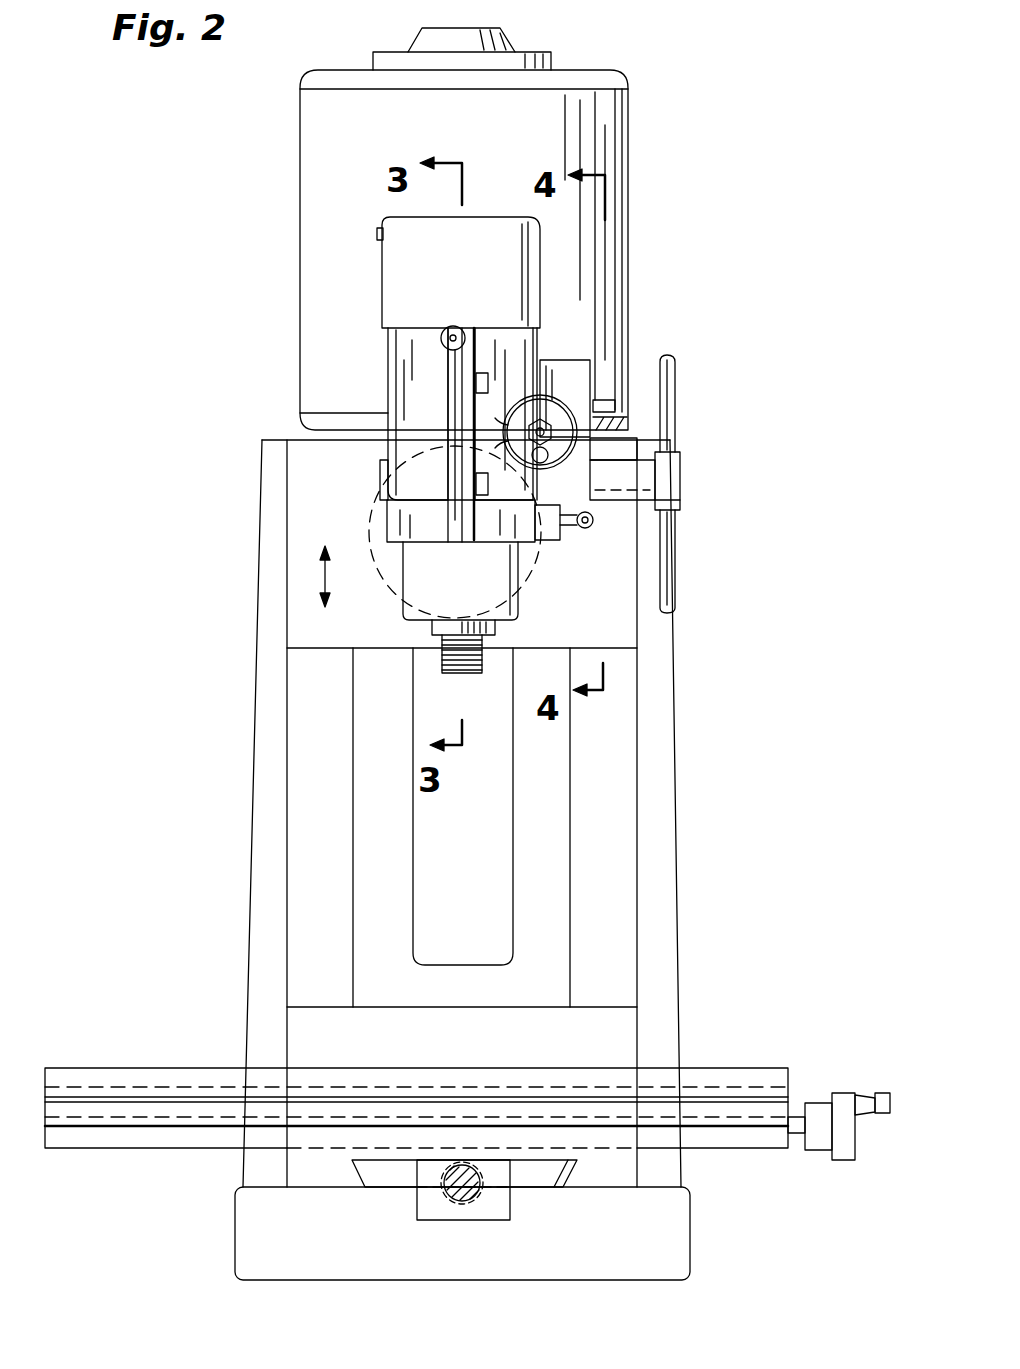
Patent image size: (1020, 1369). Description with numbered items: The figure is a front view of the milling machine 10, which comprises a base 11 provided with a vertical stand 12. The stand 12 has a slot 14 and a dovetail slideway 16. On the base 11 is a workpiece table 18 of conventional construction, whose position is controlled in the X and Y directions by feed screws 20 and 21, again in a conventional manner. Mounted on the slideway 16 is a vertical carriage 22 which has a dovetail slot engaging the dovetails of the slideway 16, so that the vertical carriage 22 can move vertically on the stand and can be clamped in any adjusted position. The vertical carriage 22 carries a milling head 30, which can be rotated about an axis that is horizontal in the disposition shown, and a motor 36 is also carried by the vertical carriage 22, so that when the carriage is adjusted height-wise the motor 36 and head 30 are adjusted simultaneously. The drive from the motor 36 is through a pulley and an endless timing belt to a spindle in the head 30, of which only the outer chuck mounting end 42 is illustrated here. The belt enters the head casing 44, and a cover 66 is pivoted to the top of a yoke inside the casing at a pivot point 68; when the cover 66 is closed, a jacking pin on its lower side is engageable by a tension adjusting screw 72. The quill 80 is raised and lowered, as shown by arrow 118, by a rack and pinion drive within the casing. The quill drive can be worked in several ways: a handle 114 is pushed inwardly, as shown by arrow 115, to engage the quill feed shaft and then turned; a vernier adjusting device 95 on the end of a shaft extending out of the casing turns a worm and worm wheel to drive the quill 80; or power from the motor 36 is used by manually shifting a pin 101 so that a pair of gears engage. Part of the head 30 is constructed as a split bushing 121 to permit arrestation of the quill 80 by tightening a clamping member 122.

The machine 10 is at (693, 791).
The base 11 is at (336, 1243).
The vertical stand 12 is at (672, 877).
The slot 14 is at (494, 893).
The dovetail slideway 16 is at (571, 797).
The workpiece table 18 is at (180, 1035).
The feed screw 20 is at (482, 1192).
The feed screw 21 is at (795, 1150).
The vertical carriage 22 is at (345, 650).
The milling head 30 is at (546, 345).
The motor 36 is at (348, 323).
The outer chuck mounting end 42 is at (446, 660).
The head casing 44 is at (528, 585).
The cover 66 is at (440, 273).
The pivot point 68 is at (377, 233).
The tension adjusting screw 72 is at (453, 326).
The quill 80 is at (455, 578).
The vernier adjusting device 95 is at (547, 468).
The pin 101 is at (610, 400).
The handle 114 is at (676, 398).
The arrow 115 is at (742, 475).
The arrow 118 is at (328, 577).
The split bushing 121 is at (445, 520).
The clamping member 122 is at (548, 545).